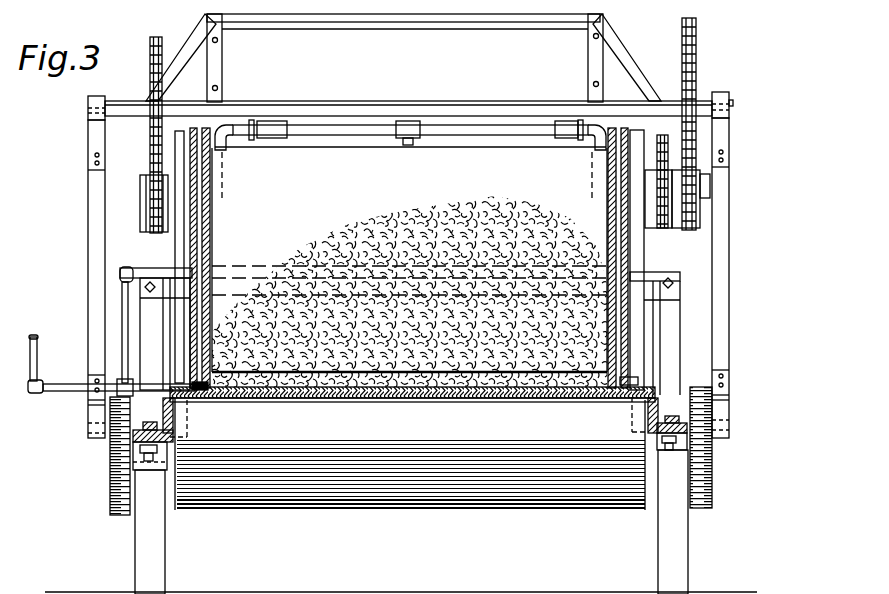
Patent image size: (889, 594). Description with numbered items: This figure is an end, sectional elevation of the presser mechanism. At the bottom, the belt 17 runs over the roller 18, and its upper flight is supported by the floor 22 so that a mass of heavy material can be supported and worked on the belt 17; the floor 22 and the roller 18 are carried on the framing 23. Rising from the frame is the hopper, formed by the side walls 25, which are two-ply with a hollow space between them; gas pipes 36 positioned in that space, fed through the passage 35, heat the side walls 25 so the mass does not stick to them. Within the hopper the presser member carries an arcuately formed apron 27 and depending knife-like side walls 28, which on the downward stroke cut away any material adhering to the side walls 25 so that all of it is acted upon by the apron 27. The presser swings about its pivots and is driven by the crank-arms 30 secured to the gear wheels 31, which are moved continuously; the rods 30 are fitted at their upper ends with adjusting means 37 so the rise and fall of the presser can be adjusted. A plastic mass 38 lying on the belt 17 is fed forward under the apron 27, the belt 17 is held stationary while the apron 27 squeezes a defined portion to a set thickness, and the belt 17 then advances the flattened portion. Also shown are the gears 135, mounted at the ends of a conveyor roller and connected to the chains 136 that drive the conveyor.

The belt 17 is at (425, 395).
The roller 18 is at (481, 495).
The floor 22 is at (350, 400).
The framing 23 is at (145, 530).
The side walls 25 is at (186, 240).
The apron 27 is at (432, 175).
The depending side walls 28 is at (212, 218).
The crank-arms 30 is at (100, 265).
The gear wheels 31 is at (118, 465).
The passage 35 is at (62, 388).
The pipes 36 is at (200, 396).
The adjusting means 37 is at (92, 135).
The plastic mass 38 is at (452, 222).
The gears 135 is at (150, 218).
The chains 136 is at (150, 52).